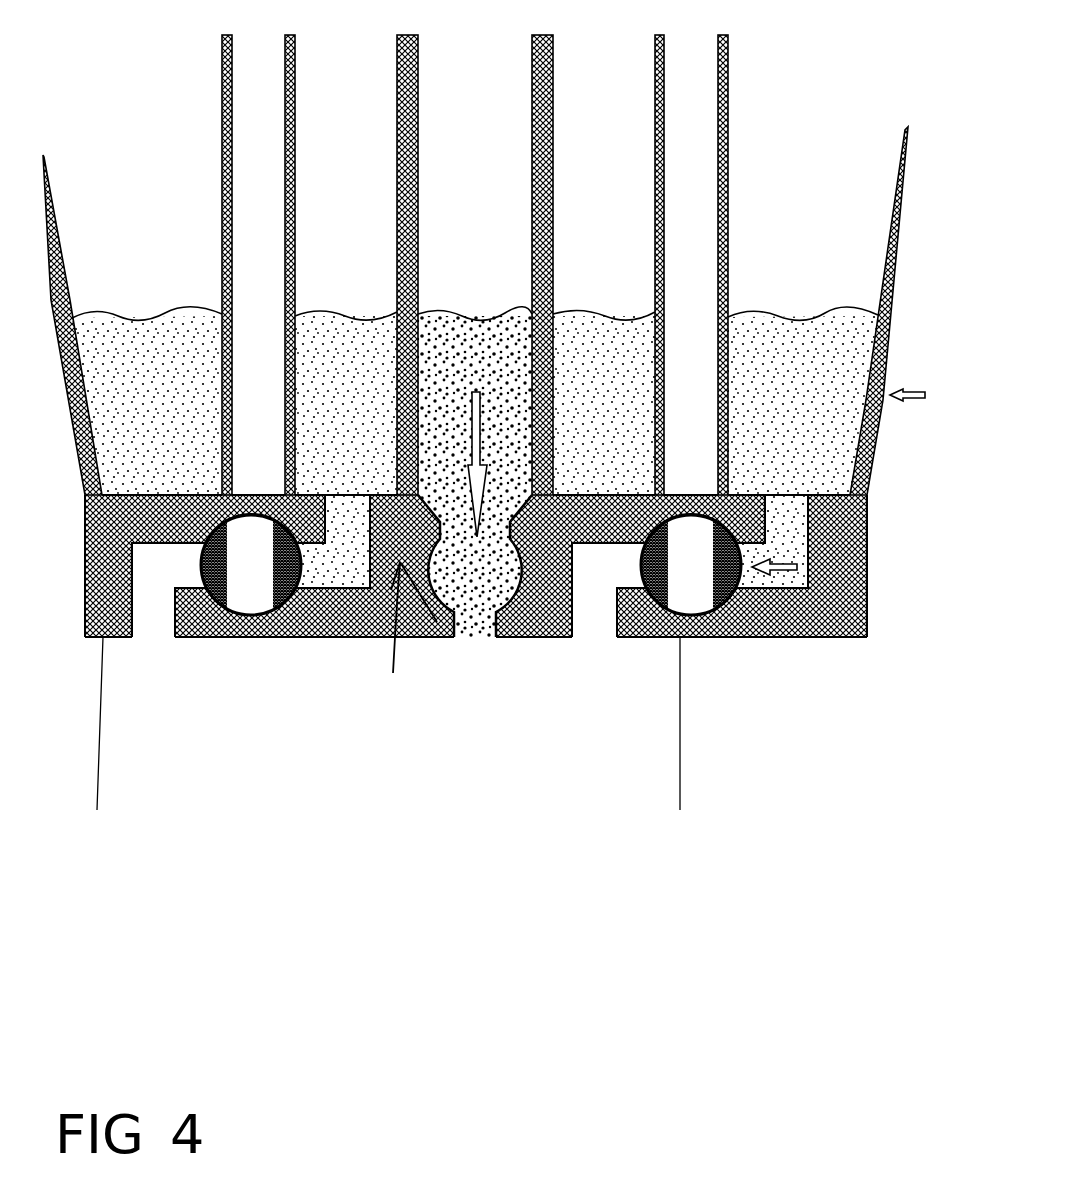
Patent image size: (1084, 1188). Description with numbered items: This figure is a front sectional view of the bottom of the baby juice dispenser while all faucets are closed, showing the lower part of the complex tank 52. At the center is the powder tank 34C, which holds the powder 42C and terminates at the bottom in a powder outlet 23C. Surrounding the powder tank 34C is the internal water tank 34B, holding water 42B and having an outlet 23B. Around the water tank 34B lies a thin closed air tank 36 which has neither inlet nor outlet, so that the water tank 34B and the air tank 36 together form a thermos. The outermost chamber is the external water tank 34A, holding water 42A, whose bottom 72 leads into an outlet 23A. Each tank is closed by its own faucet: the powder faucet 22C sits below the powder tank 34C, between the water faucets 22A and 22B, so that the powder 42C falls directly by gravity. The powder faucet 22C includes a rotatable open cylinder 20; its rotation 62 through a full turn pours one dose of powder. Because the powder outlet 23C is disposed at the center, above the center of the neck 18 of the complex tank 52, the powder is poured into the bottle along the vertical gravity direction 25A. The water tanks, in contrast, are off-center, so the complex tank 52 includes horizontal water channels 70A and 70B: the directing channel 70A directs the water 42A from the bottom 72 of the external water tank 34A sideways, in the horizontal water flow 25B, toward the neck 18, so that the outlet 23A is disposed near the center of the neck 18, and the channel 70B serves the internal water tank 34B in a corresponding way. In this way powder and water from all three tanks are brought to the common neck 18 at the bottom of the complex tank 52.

The neck of complex tank 18 is at (688, 776).
The open cylinder 20 is at (480, 612).
The water faucet 22A is at (695, 590).
The water faucet 22B is at (245, 590).
The powder faucet 22C is at (480, 572).
The outlet of water tank 34A 23A is at (595, 627).
The outlet of water tank 34B 23B is at (153, 632).
The powder outlet 23C is at (470, 633).
The vertical gravity direction 25A is at (482, 440).
The horizontal water flow 25B is at (780, 560).
The external water tank 34A is at (475, 311).
The internal water tank 34B is at (475, 238).
The powder tank 34C is at (475, 265).
The closed air thin tank 36 is at (475, 265).
The water of tank 34A 42A is at (779, 335).
The water of tank 34B 42B is at (582, 320).
The powder 42C is at (447, 320).
The complex tank 52 is at (926, 396).
The rotation 62 is at (409, 637).
The horizontal water channel 70A is at (763, 580).
The horizontal water channel 70B is at (337, 567).
The bottom of water tank 34A 72 is at (790, 587).